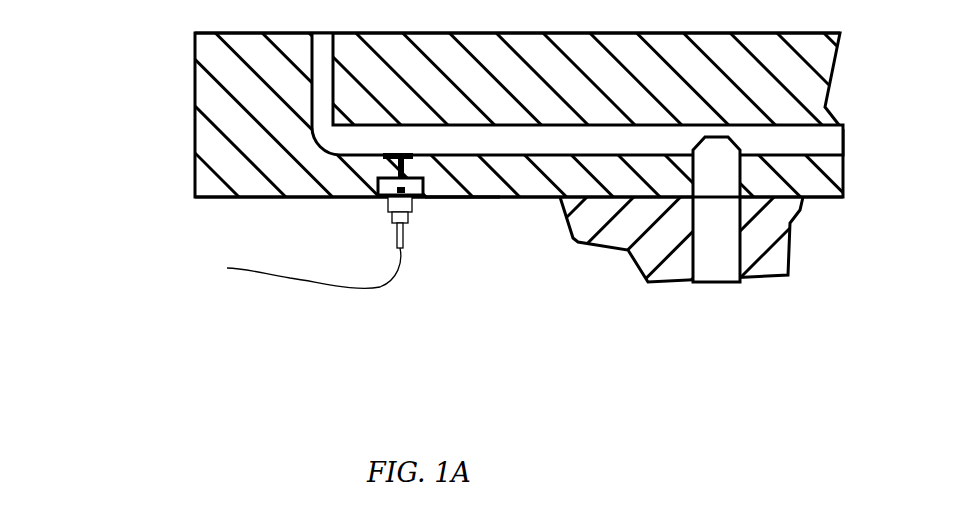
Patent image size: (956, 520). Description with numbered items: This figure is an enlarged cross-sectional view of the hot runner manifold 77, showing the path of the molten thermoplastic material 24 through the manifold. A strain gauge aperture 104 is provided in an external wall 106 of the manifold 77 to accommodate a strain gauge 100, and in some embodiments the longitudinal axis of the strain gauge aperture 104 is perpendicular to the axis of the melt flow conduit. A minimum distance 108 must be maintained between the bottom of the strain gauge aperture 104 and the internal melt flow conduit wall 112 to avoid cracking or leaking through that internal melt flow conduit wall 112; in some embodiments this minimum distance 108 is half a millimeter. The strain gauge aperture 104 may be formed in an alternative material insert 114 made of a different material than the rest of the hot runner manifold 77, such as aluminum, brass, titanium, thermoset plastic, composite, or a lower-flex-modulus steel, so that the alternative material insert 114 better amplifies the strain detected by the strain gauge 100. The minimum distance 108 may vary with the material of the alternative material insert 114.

The hot runner manifold 77 is at (220, 85).
The molten thermoplastic material 24 is at (715, 237).
The internal melt flow conduit wall 112 is at (410, 160).
The minimum distance 108 is at (396, 170).
The alternative material insert 114 is at (380, 193).
The strain gauge aperture 104 is at (257, 261).
The strain gauge 100 is at (405, 220).
The external wall 106 is at (440, 199).